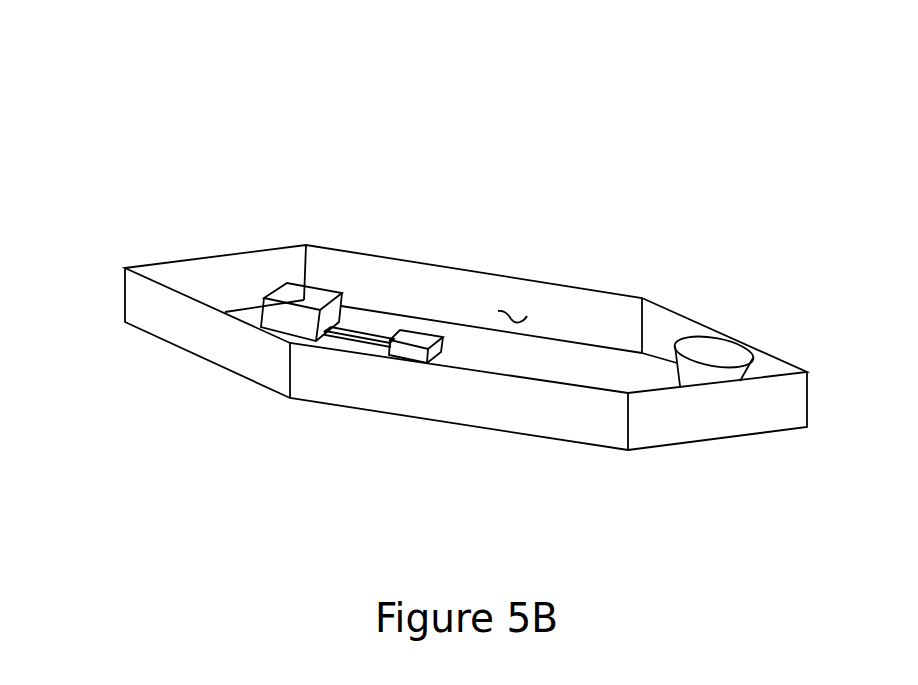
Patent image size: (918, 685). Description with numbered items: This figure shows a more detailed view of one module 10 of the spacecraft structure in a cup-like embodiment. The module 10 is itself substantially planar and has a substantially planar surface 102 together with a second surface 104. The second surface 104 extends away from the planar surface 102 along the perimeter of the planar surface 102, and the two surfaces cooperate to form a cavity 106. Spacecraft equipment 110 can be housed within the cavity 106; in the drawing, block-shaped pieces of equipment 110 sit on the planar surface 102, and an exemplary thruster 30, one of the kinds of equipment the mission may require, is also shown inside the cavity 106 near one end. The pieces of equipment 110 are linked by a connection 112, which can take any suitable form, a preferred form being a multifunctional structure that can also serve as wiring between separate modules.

The module 10 is at (116, 103).
The thruster 30 is at (728, 352).
The substantially planar surface 102 is at (557, 368).
The second surface 104 is at (187, 283).
The cavity 106 is at (518, 311).
The spacecraft equipment 110 is at (307, 292).
The connection 112 is at (387, 338).